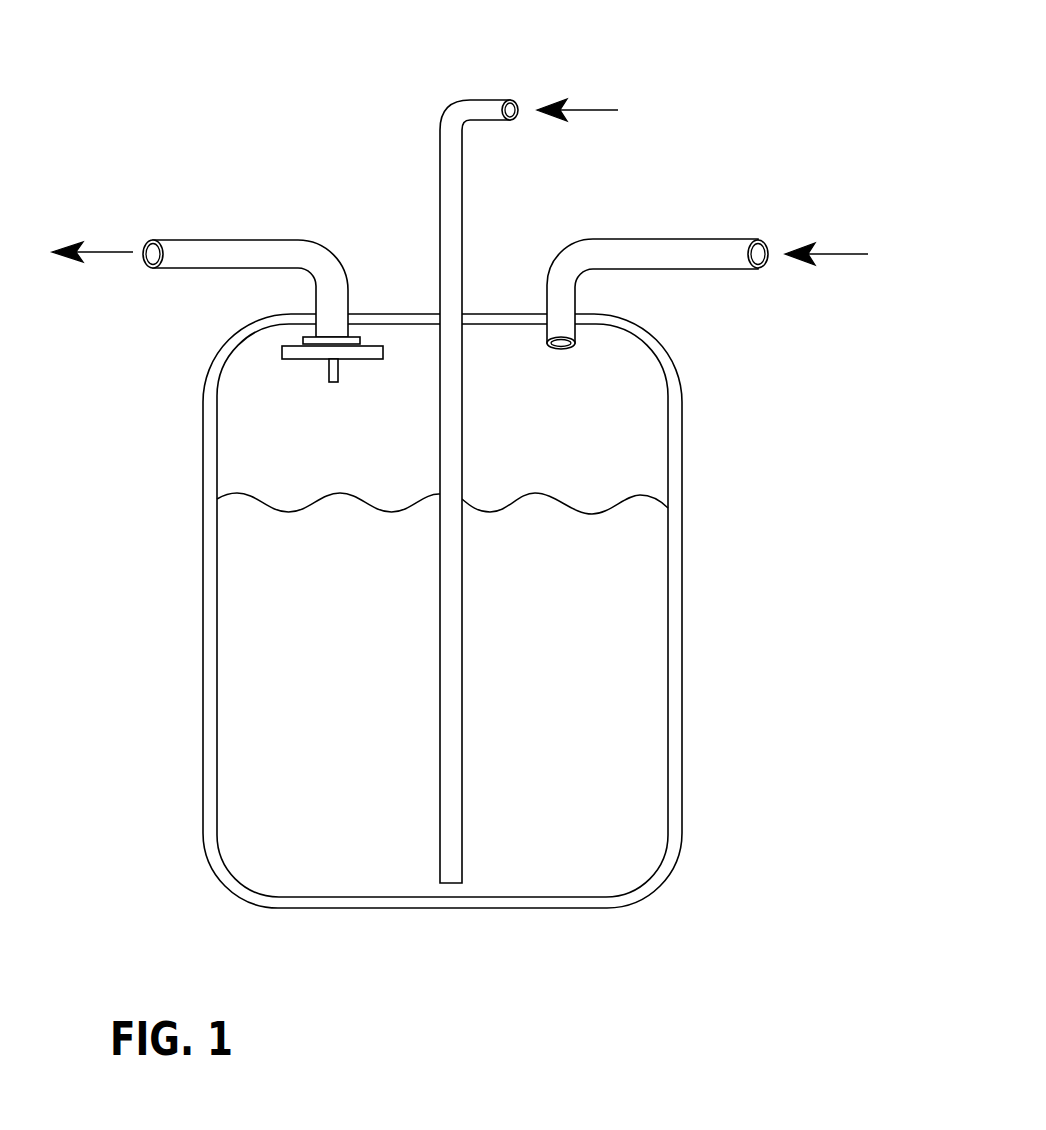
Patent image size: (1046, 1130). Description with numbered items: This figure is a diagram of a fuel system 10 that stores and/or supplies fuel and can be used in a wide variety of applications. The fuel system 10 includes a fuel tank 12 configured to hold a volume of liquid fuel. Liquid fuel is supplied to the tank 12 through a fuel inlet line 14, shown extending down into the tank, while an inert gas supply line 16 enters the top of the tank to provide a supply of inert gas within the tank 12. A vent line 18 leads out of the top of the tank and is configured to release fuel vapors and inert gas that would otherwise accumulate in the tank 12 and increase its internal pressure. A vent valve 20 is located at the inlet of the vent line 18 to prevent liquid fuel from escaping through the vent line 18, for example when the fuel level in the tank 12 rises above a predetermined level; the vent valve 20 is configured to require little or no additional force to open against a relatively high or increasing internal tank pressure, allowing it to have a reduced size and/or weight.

The fuel system 10 is at (698, 72).
The fuel tank 12 is at (675, 466).
The fuel inlet line 14 is at (488, 112).
The inert gas supply line 16 is at (705, 252).
The vent line 18 is at (203, 253).
The vent valve 20 is at (310, 354).